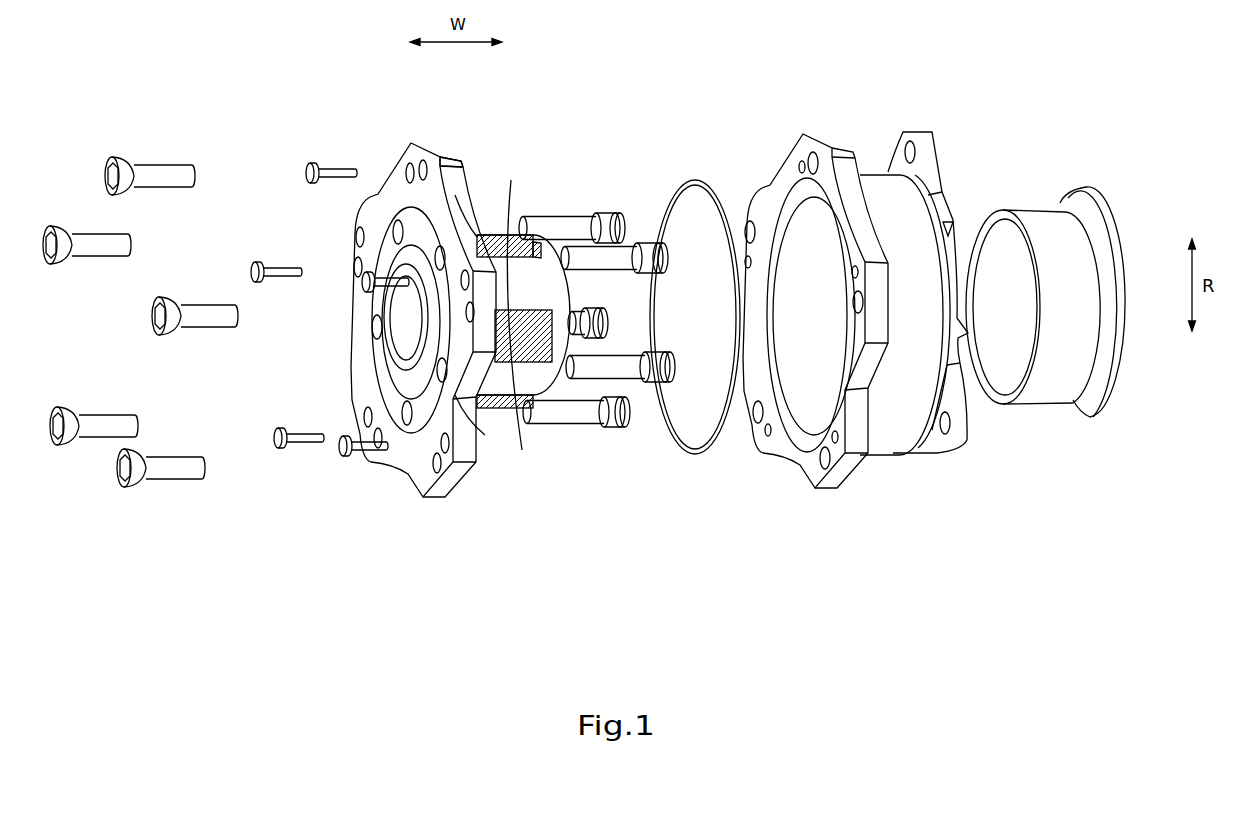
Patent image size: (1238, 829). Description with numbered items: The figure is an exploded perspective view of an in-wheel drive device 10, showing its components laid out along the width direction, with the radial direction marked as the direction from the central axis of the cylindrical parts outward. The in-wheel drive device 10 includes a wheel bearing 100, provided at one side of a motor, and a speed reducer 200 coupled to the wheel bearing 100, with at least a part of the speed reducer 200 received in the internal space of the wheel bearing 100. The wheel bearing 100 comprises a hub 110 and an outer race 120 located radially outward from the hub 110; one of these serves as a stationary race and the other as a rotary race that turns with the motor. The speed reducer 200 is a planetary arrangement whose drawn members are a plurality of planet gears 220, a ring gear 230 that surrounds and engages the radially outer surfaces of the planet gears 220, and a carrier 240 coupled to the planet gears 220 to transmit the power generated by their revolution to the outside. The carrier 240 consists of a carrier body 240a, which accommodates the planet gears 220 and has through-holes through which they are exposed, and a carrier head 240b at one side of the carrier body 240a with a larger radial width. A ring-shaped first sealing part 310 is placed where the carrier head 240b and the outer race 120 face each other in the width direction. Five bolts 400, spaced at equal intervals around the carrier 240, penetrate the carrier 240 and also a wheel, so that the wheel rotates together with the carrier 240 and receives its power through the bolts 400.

The in-wheel drive device 10 is at (188, 61).
The wheel bearing 100 is at (874, 101).
The hub 110 is at (918, 132).
The outer race 120 is at (807, 135).
The speed reducer 200 is at (663, 546).
The planet gears 220 is at (508, 345).
The ring gear 230 is at (1037, 227).
The carrier 240 is at (417, 136).
The carrier body 240a is at (504, 275).
The carrier head 240b is at (455, 173).
The first sealing part 310 is at (692, 182).
The bolts 400 is at (562, 226).